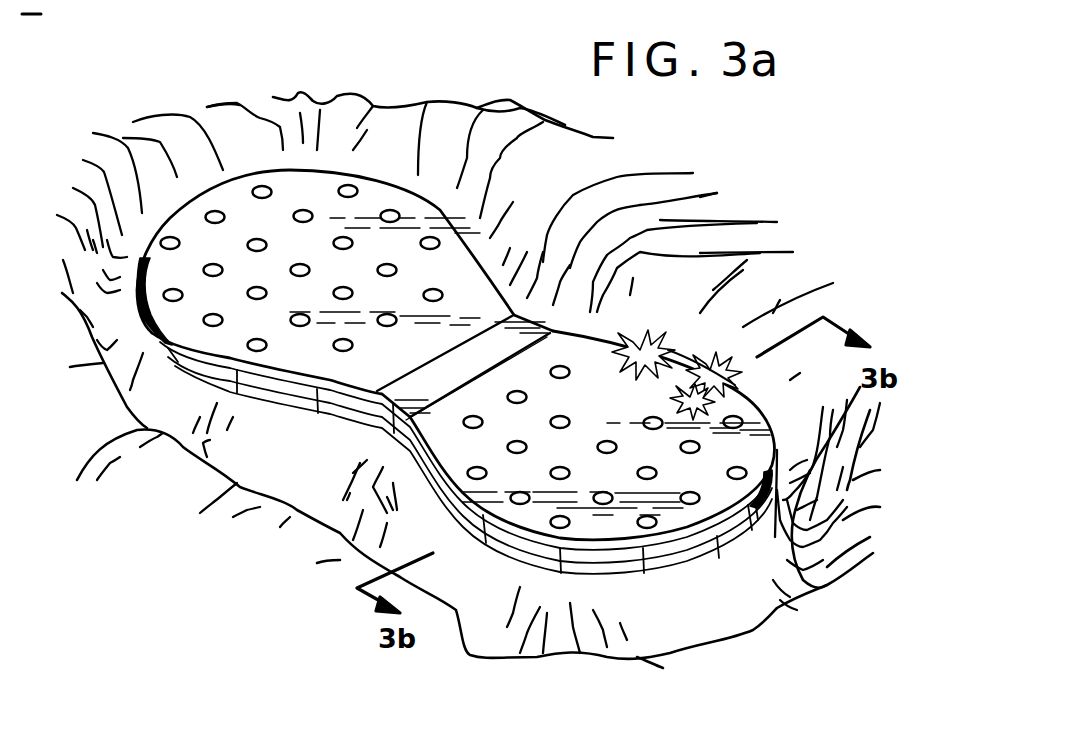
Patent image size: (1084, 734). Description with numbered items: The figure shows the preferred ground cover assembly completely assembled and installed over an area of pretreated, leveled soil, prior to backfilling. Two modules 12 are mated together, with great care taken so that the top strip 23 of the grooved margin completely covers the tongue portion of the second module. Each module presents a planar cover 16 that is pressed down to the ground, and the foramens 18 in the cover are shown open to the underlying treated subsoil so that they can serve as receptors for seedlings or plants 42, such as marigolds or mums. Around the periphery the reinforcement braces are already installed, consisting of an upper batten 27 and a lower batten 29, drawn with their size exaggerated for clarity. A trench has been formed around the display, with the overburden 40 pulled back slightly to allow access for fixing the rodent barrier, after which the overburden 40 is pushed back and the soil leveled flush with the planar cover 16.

The module 12 is at (376, 197).
The planar cover 16 is at (395, 305).
The foramen 18 is at (334, 244).
The top strip 23 is at (457, 383).
The upper batten 27 is at (220, 367).
The lower batten 29 is at (340, 413).
The overburden 40 is at (560, 181).
The plants 42 is at (698, 362).